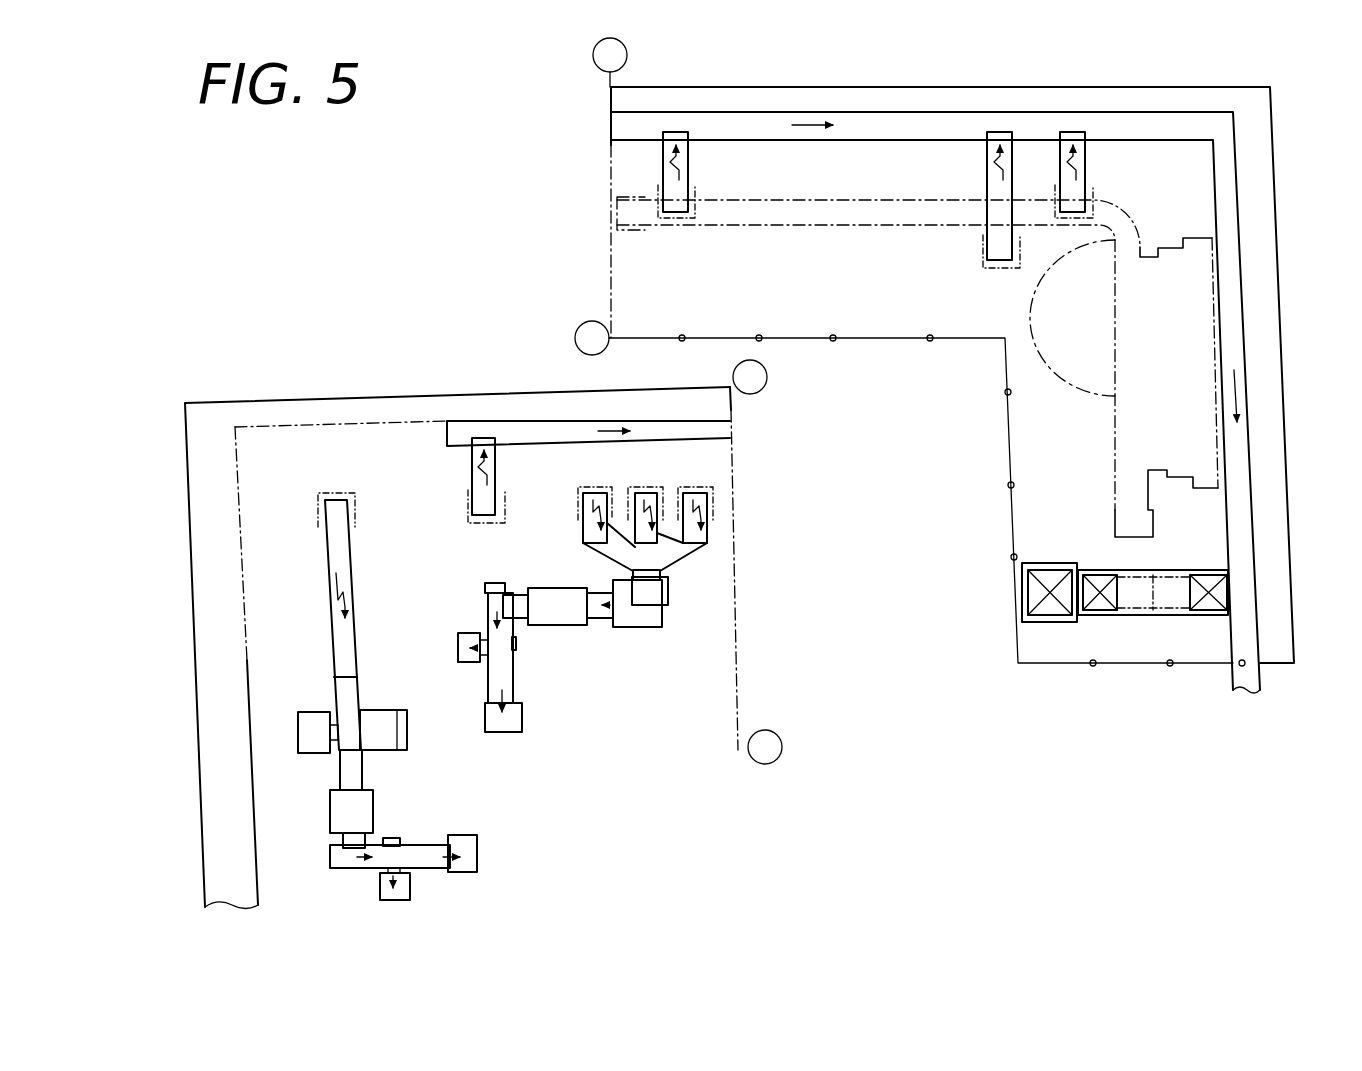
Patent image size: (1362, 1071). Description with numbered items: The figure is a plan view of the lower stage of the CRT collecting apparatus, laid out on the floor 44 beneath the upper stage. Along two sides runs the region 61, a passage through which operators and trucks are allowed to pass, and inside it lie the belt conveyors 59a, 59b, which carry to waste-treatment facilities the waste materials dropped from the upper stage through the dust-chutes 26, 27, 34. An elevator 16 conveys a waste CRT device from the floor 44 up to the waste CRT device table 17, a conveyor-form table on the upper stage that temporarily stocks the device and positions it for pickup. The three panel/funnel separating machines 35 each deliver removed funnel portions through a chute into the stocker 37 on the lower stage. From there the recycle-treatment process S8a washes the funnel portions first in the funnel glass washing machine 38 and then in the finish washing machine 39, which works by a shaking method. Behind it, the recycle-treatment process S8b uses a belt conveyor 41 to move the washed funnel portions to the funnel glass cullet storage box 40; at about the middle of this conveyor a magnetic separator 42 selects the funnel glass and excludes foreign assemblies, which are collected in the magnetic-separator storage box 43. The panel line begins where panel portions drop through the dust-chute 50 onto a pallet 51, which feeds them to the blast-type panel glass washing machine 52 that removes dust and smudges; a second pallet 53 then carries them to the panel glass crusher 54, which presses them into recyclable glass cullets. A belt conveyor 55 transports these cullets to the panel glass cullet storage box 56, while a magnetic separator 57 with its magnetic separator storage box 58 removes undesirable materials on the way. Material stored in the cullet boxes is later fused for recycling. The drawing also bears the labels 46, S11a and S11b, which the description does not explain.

The elevator 16 is at (1028, 598).
The waste CRT device table 17 is at (1137, 603).
The dust-chute 26 is at (1085, 160).
The dust-chute 27 is at (980, 167).
The dust-chute 34 is at (688, 163).
The panel/funnel separating machine 35 is at (680, 545).
The stocker 37 is at (655, 593).
The funnel glass washing machine 38 is at (635, 618).
The finish washing machine 39 is at (550, 595).
The funnel glass cullet storage box 40 is at (510, 733).
The belt conveyor 41 is at (505, 688).
The magnetic separator 42 is at (520, 644).
The magnetic-separator storage box 43 is at (468, 633).
The floor 44 is at (1060, 647).
The sensor 46 is at (495, 462).
The dust-chute 50 is at (347, 550).
The pallet 51 is at (342, 688).
The panel glass washing machine 52 is at (385, 728).
The pallet 53 is at (342, 772).
The panel glass crusher 54 is at (340, 818).
The belt conveyor 55 is at (435, 870).
The panel glass cullet storage box 56 is at (477, 850).
The magnetic separator 57 is at (393, 838).
The magnetic separator storage box 58 is at (378, 890).
The belt conveyor 59a is at (885, 127).
The belt conveyor 59b is at (1228, 272).
The region 61 is at (992, 95).
The signal S11a is at (374, 696).
The signal S11b is at (422, 830).
The recycle-treatment process S8a is at (603, 634).
The recycle-treatment process S8b is at (526, 677).